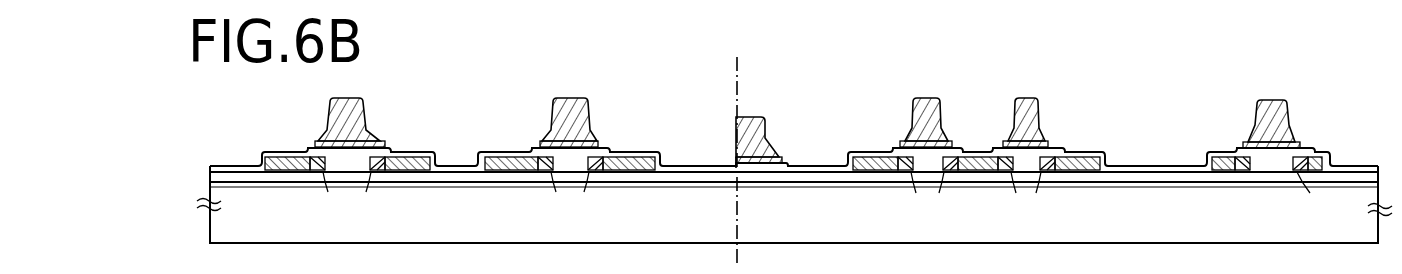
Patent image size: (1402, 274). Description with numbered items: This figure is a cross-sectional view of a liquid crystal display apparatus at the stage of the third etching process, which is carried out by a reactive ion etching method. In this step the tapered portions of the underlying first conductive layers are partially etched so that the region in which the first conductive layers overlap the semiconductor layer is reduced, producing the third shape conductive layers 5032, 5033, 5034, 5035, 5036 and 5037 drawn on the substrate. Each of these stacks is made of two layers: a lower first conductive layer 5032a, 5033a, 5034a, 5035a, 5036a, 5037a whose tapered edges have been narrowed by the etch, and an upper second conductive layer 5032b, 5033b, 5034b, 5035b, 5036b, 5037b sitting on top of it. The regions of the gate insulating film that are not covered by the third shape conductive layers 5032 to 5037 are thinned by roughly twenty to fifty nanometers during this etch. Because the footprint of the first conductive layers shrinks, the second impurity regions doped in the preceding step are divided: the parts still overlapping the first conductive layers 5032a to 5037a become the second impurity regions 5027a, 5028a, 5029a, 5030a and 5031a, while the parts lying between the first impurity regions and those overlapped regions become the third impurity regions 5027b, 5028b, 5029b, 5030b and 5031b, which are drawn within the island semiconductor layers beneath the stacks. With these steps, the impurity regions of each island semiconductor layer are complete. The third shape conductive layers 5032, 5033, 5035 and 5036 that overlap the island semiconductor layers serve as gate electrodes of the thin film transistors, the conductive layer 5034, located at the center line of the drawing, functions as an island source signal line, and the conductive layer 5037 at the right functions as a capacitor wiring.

The second impurity region 5027a is at (382, 172).
The third impurity region 5027b is at (316, 172).
The second impurity region 5028a is at (609, 172).
The third impurity region 5028b is at (544, 172).
The second impurity region 5029a is at (962, 172).
The third impurity region 5029b is at (901, 172).
The second impurity region 5030a is at (1077, 226).
The third impurity region 5030b is at (1002, 172).
The second impurity region 5031a is at (1240, 170).
The third impurity region 5031b is at (1222, 172).
The third shape conductive layer 5032 is at (234, 90).
The first conductive layer 5032a is at (326, 143).
The second conductive layer 5032b is at (331, 131).
The third shape conductive layer 5033 is at (447, 54).
The first conductive layer 5033a is at (544, 141).
The second conductive layer 5033b is at (551, 125).
The third shape conductive layer 5034 is at (648, 54).
The first conductive layer 5034a is at (737, 157).
The second conductive layer 5034b is at (748, 130).
The third shape conductive layer 5035 is at (825, 54).
The first conductive layer 5035a is at (903, 141).
The second conductive layer 5035b is at (913, 126).
The third shape conductive layer 5036 is at (1158, 54).
The first conductive layer 5036a is at (1050, 143).
The second conductive layer 5036b is at (1023, 130).
The third shape conductive layer 5037 is at (1152, 203).
The first conductive layer 5037a is at (1258, 129).
The second conductive layer 5037b is at (1228, 170).